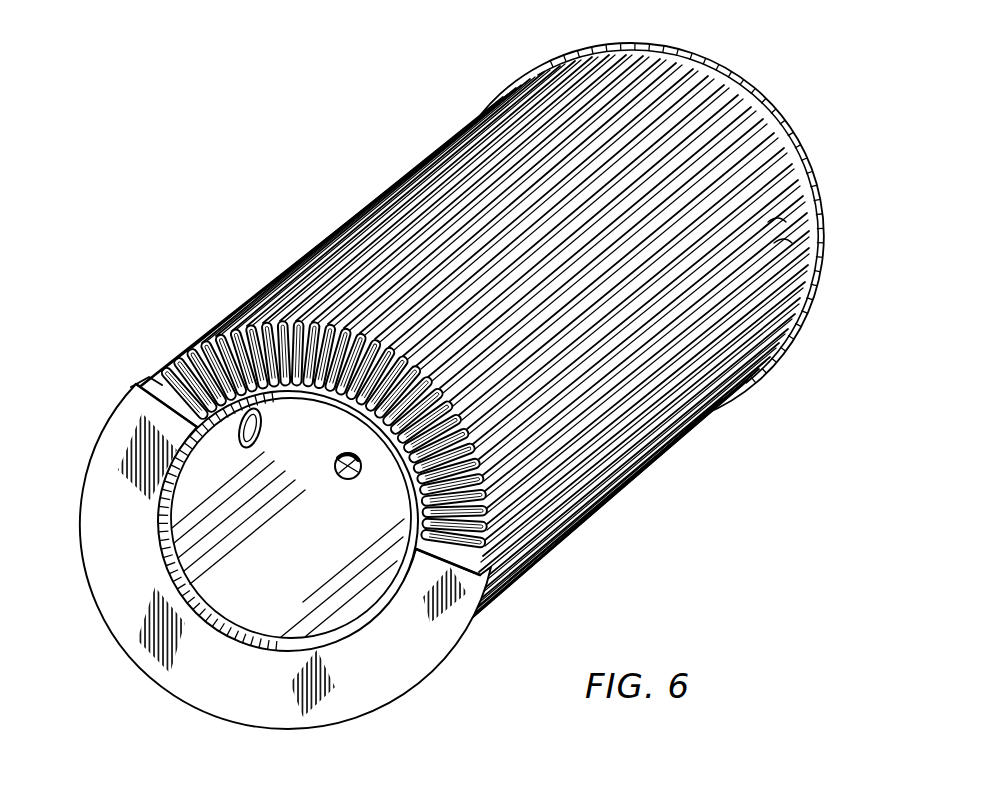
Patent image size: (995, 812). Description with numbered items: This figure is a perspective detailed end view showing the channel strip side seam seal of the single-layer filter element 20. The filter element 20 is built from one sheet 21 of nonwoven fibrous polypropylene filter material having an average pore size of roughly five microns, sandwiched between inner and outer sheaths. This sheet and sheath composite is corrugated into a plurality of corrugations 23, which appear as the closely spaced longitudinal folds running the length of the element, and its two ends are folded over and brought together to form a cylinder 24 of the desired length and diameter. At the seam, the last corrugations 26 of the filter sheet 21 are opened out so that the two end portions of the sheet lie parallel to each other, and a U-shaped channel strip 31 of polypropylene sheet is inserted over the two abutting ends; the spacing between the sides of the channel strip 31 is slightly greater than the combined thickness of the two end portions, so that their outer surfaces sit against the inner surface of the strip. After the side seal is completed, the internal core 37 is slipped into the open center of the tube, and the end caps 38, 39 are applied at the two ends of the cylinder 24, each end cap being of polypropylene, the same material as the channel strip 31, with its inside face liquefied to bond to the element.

The filter element 20 is at (620, 498).
The sheet 21 is at (453, 167).
The corrugations 23 is at (783, 248).
The cylinder 24 is at (363, 211).
The last corrugations 26 is at (404, 449).
The U-shaped channel strip 31 is at (483, 395).
The internal core 37 is at (279, 582).
The end cap 38 is at (738, 83).
The end cap 39 is at (112, 455).